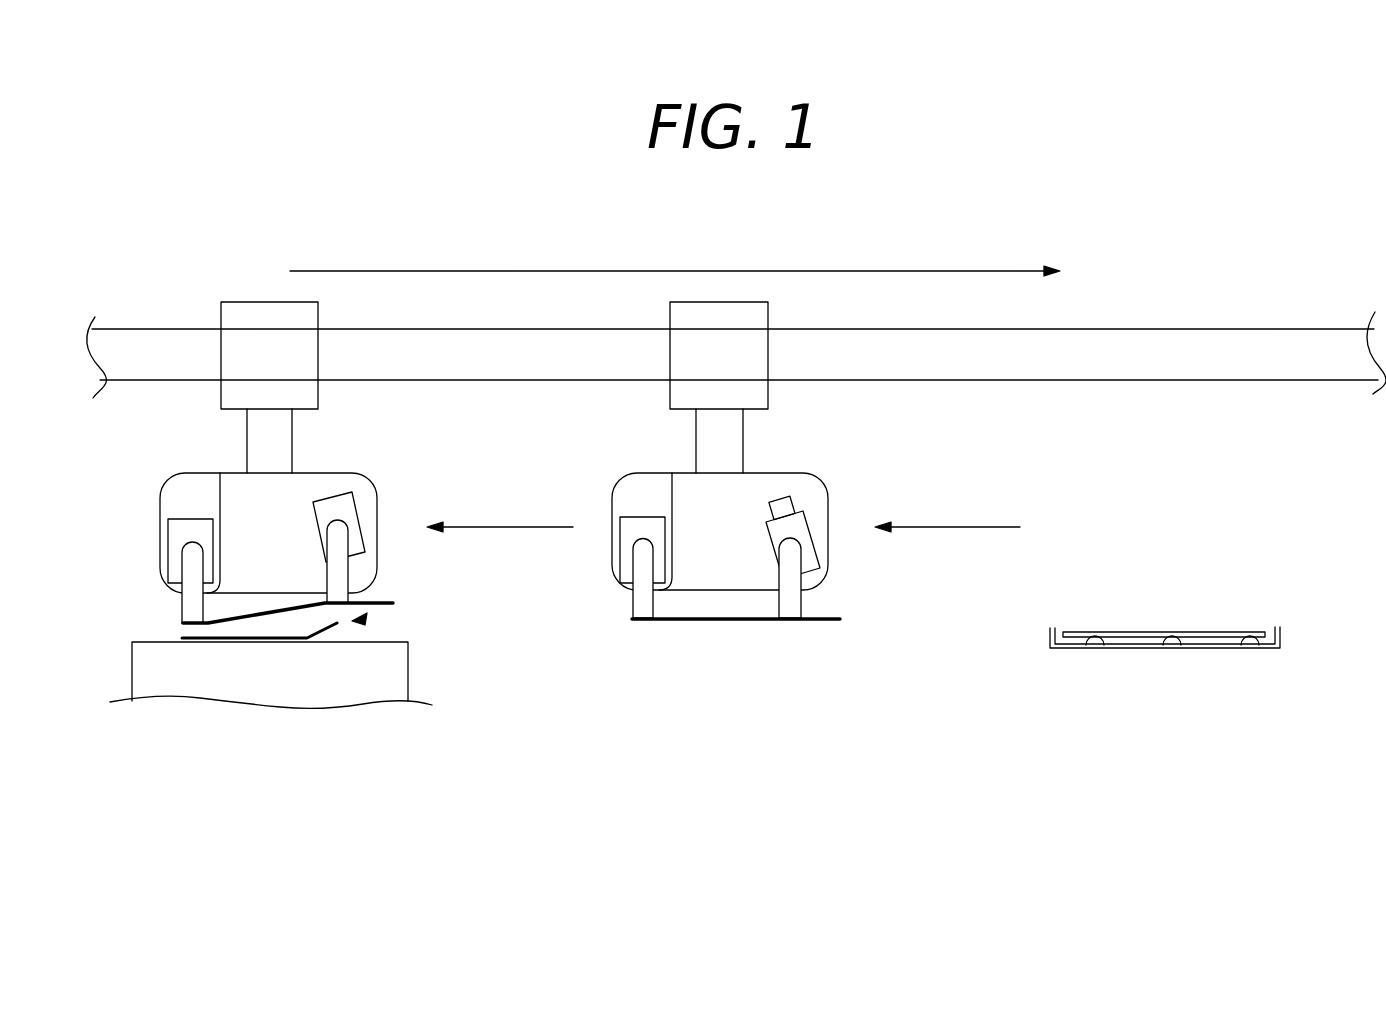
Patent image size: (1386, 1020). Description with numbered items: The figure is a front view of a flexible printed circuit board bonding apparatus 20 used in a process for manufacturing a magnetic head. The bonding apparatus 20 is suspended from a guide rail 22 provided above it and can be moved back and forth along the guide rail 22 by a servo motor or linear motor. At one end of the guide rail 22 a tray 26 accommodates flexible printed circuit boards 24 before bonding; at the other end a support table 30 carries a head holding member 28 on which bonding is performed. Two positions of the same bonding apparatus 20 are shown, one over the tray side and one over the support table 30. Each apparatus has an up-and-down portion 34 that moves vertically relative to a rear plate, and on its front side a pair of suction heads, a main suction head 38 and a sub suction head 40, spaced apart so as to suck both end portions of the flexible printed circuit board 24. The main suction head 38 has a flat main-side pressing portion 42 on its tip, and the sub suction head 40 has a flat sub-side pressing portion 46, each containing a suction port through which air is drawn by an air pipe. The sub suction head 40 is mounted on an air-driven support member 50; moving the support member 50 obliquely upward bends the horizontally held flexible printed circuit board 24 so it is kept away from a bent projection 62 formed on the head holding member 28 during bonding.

The flexible printed circuit board bonding apparatus 20 is at (497, 462).
The guide rail 22 is at (1153, 336).
The flexible printed circuit board 24 is at (370, 602).
The tray 26 is at (1060, 637).
The head holding member 28 is at (360, 619).
The support table 30 is at (402, 670).
The up-and-down portion 34 is at (303, 482).
The main suction head 38 is at (187, 600).
The sub suction head 40 is at (342, 572).
The main-side pressing portion 42 is at (183, 635).
The sub-side pressing portion 46 is at (340, 607).
The support member 50 is at (350, 518).
The bent projection 62 is at (333, 628).